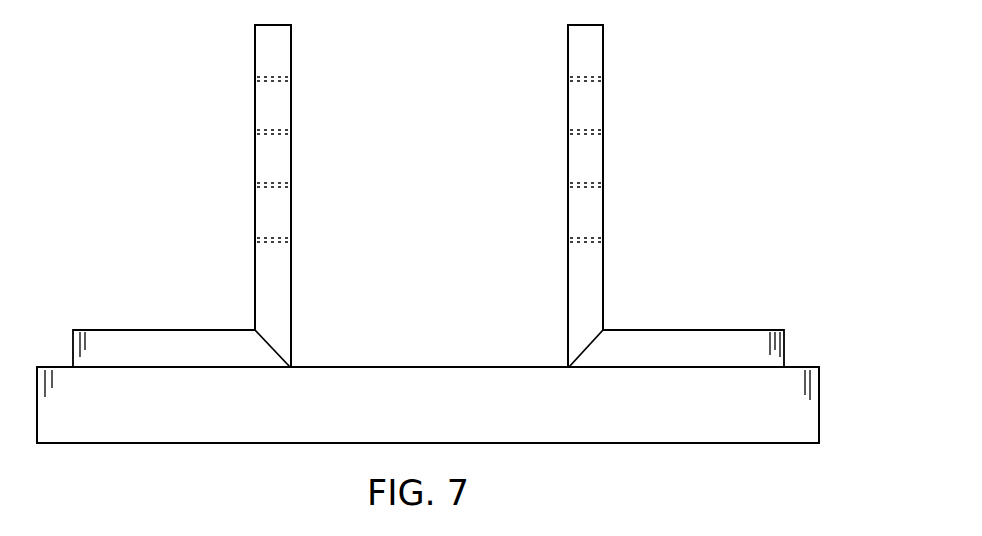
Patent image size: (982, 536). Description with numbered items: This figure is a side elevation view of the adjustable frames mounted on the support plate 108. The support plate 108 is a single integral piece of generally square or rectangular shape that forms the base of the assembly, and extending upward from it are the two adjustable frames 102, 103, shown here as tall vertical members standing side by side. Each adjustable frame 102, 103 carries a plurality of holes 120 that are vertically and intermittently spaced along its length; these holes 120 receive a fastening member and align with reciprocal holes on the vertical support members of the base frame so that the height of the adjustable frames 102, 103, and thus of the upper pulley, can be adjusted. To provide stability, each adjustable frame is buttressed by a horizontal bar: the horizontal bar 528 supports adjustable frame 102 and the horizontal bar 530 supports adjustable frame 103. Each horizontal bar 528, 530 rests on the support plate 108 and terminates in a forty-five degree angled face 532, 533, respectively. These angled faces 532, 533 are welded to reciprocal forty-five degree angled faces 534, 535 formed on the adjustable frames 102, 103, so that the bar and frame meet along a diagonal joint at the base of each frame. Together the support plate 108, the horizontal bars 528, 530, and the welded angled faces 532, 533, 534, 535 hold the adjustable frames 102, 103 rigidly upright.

The adjustable frame 102 is at (595, 42).
The adjustable frame 103 is at (264, 49).
The support plate 108 is at (812, 410).
The holes 120 is at (558, 79).
The horizontal bar 528 is at (725, 345).
The horizontal bar 530 is at (110, 343).
The angled face 532 is at (597, 347).
The angled face 533 is at (262, 347).
The angled face 534 is at (571, 337).
The angled face 535 is at (279, 337).